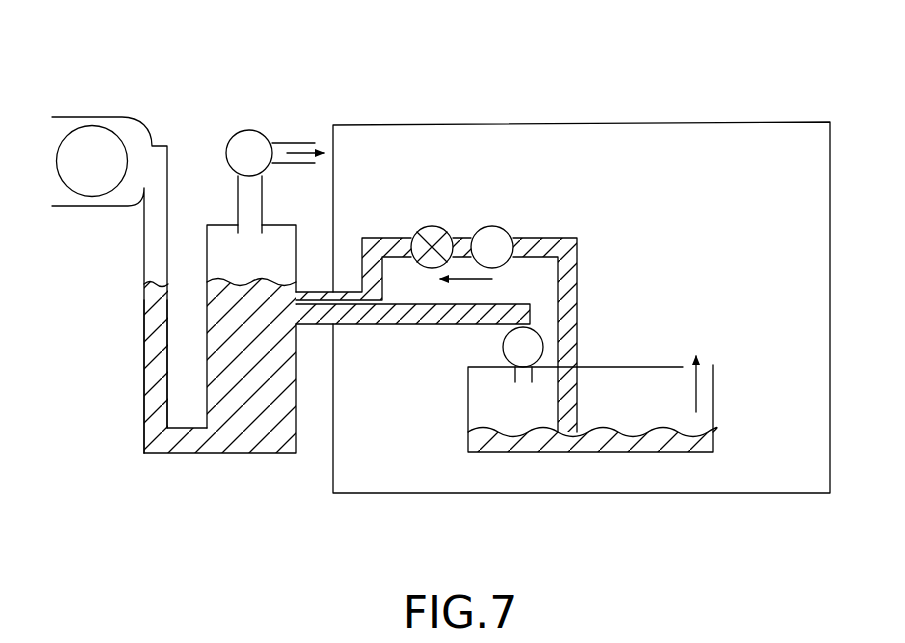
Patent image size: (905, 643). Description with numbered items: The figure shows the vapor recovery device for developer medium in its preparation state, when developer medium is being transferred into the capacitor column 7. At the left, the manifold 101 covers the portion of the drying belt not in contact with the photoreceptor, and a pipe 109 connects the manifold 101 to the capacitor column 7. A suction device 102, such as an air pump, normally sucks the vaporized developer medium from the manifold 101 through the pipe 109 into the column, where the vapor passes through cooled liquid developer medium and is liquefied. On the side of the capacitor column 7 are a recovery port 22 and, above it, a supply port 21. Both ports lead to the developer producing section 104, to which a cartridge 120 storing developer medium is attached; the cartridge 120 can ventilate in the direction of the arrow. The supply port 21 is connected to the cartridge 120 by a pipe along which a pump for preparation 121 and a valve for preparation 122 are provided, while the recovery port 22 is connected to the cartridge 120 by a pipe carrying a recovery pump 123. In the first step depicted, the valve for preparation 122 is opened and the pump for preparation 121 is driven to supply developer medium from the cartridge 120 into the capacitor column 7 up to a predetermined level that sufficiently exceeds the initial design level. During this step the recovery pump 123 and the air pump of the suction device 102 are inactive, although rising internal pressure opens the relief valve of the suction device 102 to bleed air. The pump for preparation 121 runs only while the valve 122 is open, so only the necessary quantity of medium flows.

The capacitor column 7 is at (206, 402).
The supply port 21 is at (306, 292).
The recovery port 22 is at (300, 325).
The manifold 101 is at (63, 207).
The suction device 102 is at (250, 128).
The developer producing section 104 is at (768, 122).
The pipe 109 is at (142, 263).
The cartridge 120 is at (565, 452).
The pump for preparation 121 is at (500, 226).
The valve for preparation 122 is at (425, 226).
The recovery pump 123 is at (503, 347).